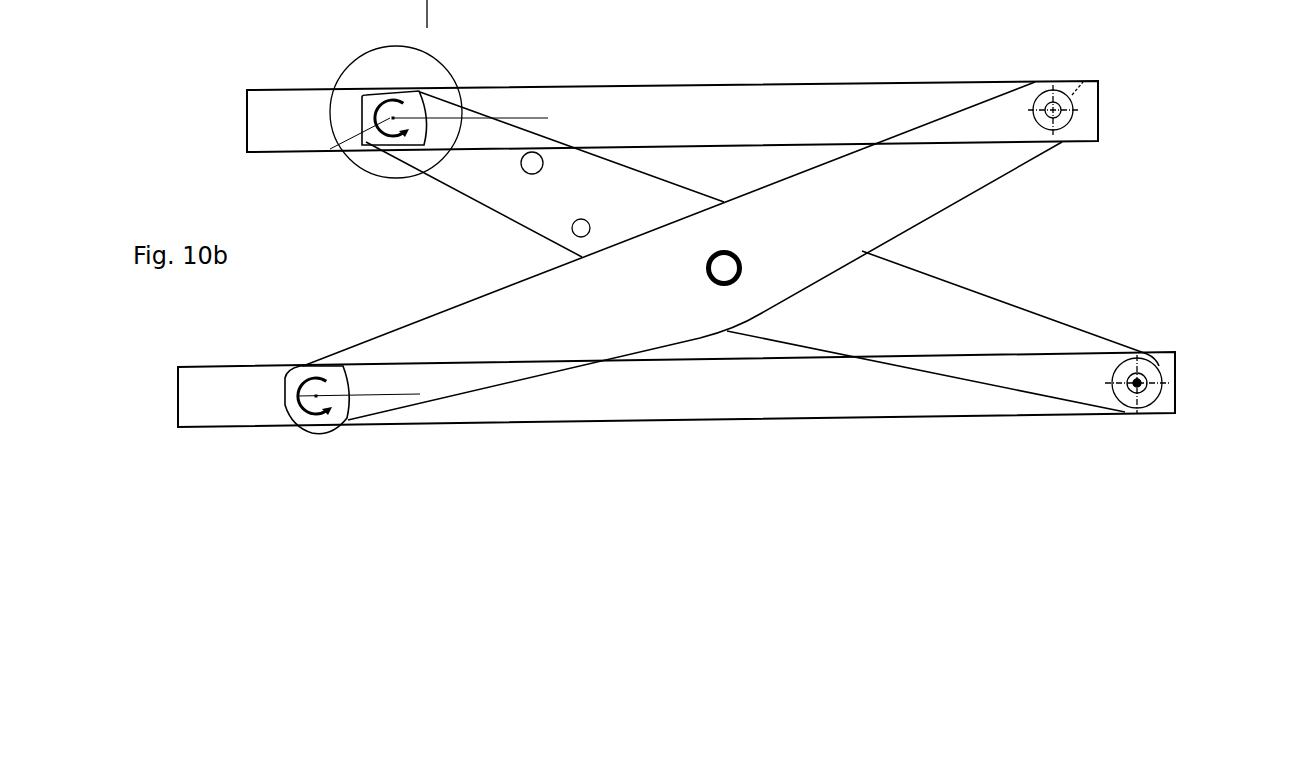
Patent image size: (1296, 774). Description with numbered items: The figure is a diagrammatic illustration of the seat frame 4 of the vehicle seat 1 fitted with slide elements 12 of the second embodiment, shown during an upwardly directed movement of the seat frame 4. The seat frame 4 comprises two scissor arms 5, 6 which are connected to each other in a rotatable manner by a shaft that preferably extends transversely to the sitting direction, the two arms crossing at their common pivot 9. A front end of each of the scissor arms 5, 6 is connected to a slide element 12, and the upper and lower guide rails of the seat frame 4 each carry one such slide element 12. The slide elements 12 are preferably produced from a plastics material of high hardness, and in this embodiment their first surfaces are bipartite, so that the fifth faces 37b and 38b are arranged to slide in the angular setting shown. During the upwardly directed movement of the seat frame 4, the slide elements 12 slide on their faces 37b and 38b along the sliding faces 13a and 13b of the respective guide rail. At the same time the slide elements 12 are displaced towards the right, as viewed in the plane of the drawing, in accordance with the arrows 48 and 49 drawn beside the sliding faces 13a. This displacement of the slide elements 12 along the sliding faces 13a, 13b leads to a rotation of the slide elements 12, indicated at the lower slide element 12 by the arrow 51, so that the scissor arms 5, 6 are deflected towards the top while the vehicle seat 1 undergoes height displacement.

The vehicle seat 1 is at (920, 392).
The seat frame 4 is at (1172, 211).
The scissor arm 5 is at (975, 168).
The scissor arm 6 is at (1005, 320).
The central pivot joint 9 is at (727, 272).
The slide element 12 is at (405, 112).
The sliding face 13a is at (520, 117).
The sliding face 13b is at (430, 151).
The fifth face 37b is at (402, 89).
The fifth face 38b is at (378, 152).
The arrow 48 is at (532, 116).
The arrow 49 is at (412, 390).
The arrow 51 is at (285, 380).